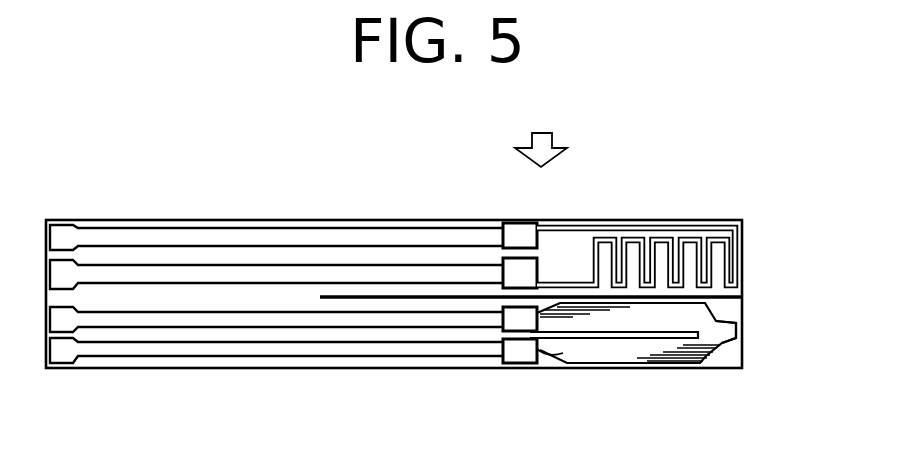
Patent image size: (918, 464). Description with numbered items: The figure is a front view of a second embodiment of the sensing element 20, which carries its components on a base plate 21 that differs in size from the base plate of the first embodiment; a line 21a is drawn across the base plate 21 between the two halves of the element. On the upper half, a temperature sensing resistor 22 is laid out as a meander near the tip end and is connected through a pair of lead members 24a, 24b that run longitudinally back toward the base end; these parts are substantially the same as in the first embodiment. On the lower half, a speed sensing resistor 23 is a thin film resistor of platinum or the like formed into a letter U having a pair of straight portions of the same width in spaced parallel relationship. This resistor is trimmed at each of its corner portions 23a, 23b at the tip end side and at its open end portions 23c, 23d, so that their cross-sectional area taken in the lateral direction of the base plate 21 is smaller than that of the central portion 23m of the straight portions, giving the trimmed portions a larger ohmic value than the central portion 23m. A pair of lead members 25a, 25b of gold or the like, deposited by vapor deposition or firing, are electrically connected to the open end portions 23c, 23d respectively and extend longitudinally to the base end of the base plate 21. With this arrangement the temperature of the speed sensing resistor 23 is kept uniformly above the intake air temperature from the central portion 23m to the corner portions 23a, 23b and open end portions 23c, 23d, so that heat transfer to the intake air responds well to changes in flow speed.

The sensing element 20 is at (425, 212).
The base plate 21 is at (328, 219).
The partition line of substrate 21a is at (743, 296).
The temperature sensing resistor 22 is at (744, 255).
The speed sensing resistor 23 is at (670, 377).
The corner portion 23a is at (713, 350).
The corner portion 23b is at (733, 322).
The open end portion 23c is at (563, 352).
The open end portion 23d is at (528, 340).
The central portion 23m is at (625, 345).
The lead member 24a is at (137, 273).
The lead member 24b is at (231, 234).
The lead member 25a is at (155, 350).
The lead member 25b is at (259, 318).